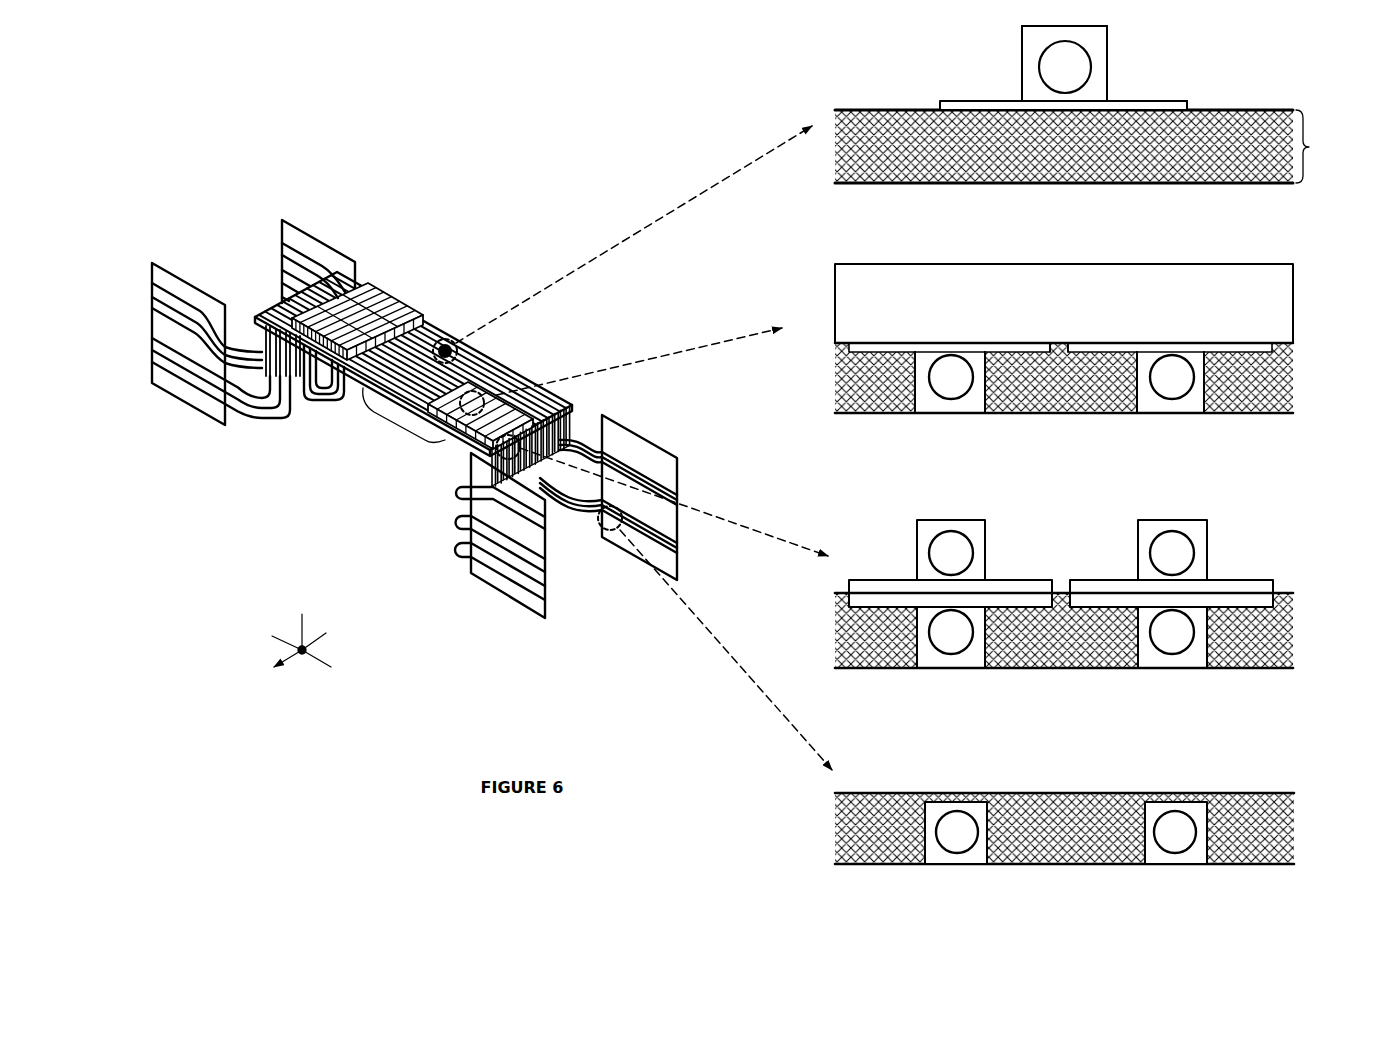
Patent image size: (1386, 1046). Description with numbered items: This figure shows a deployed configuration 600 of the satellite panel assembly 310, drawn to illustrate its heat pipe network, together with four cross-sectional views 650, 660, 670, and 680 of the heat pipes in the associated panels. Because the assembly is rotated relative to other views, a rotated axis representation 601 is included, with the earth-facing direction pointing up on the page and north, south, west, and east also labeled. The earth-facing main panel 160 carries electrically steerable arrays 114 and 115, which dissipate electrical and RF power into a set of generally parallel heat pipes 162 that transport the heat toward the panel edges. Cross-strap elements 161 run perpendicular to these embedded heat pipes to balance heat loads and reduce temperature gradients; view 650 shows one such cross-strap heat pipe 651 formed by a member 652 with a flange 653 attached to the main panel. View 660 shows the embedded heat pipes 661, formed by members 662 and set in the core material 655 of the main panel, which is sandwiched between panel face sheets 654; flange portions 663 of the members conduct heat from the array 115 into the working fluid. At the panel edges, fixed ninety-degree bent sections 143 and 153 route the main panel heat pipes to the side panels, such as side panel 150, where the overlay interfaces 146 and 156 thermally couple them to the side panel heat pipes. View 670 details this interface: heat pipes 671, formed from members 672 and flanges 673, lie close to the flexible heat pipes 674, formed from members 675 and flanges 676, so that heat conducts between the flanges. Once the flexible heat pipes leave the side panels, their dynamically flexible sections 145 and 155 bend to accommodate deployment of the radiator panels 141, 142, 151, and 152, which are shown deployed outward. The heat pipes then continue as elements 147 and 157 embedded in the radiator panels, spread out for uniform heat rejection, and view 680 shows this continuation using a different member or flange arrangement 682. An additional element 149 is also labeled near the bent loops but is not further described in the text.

The deployed configuration 600 is at (158, 108).
The rotated axis representation 601 is at (222, 573).
The assembly 310 is at (200, 214).
The electrically steerable array 114 is at (394, 303).
The electrically steerable array 115 is at (492, 375).
The radiator panel 141 is at (279, 230).
The radiator panel 142 is at (150, 270).
The bent section 143 is at (272, 307).
The dynamically flexible section 145 is at (241, 420).
The overlay interface 146 is at (266, 372).
The embedded heat pipes of radiator panel 147 is at (309, 256).
The conductor loops 149 is at (308, 402).
The side panel 150 is at (1234, 649).
The radiator panel 151 is at (616, 433).
The radiator panel 152 is at (540, 603).
The bent section 153 is at (470, 447).
The dynamically flexible section 155 is at (456, 517).
The overlay interface 156 is at (570, 437).
The embedded heat pipes of radiator panel 157 is at (484, 567).
The main panel 160 is at (481, 348).
The cross-strap elements 161 is at (419, 356).
The heat pipes 162 is at (375, 430).
The cross-sectional view 650 is at (1318, 79).
The heat pipe 651 is at (1047, 66).
The member 652 is at (1018, 80).
The flange 653 is at (1159, 107).
The panel face sheets 654 is at (1235, 108).
The material 655 is at (1319, 146).
The cross-sectional view 660 is at (1318, 318).
The embedded heat pipes 661 is at (953, 386).
The members 662 is at (923, 402).
The flange portions 663 is at (1082, 340).
The cross-sectional view 670 is at (1318, 567).
The heat pipes 671 is at (954, 551).
The members 672 is at (925, 540).
The flanges 673 is at (1086, 590).
The heat pipes 674 is at (954, 648).
The members 675 is at (923, 658).
The flanges 676 is at (1088, 606).
The cross-sectional view 680 is at (1318, 782).
The member or flange arrangement 682 is at (933, 847).